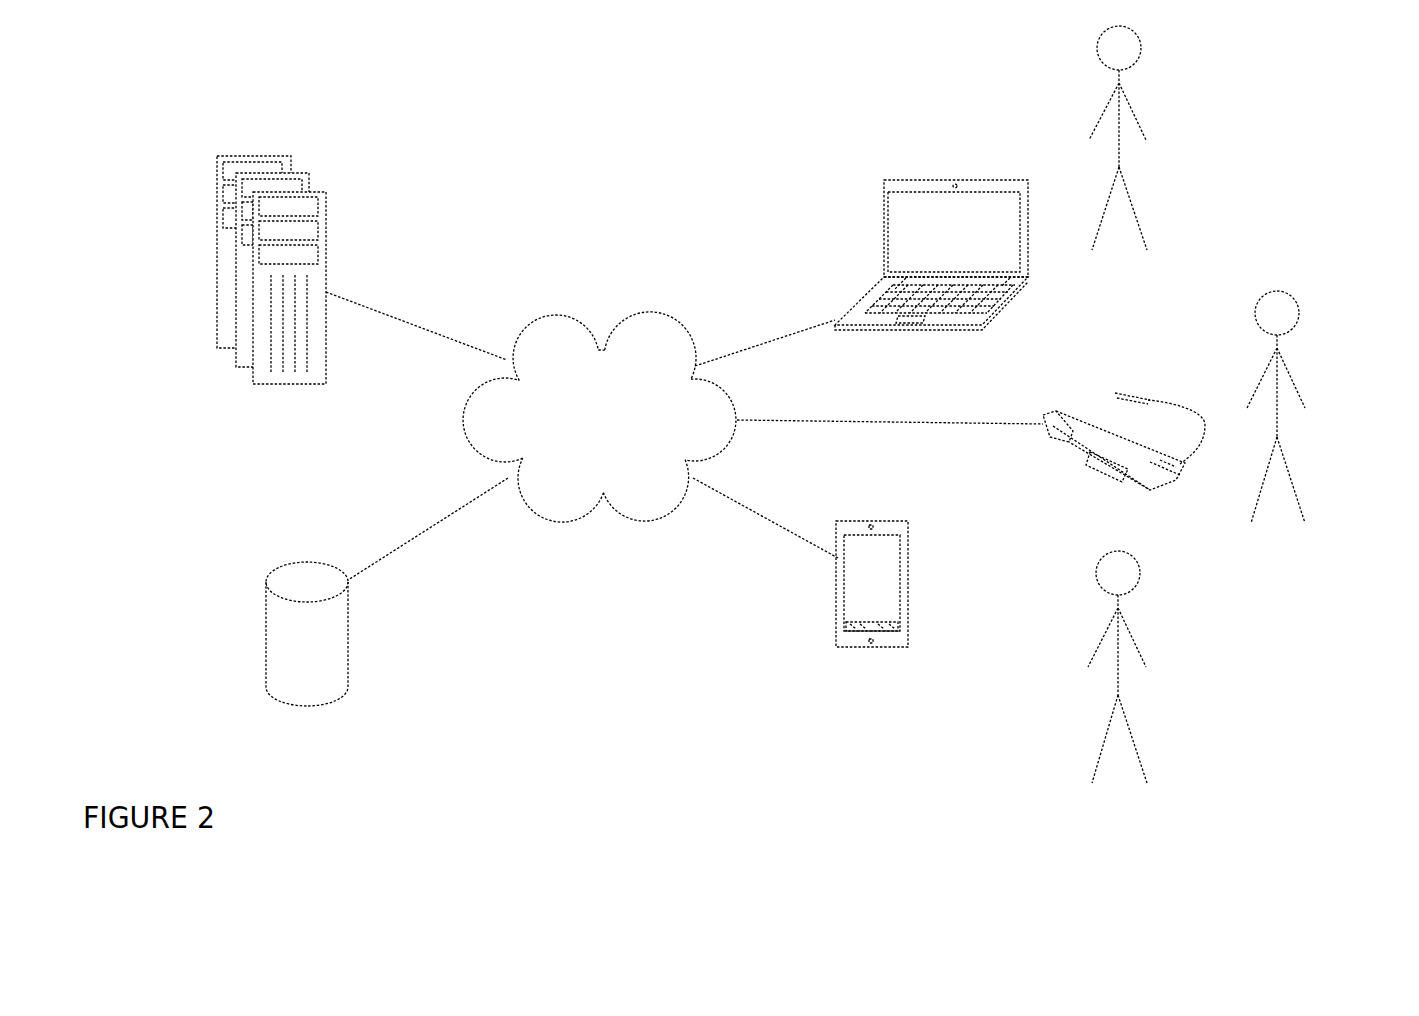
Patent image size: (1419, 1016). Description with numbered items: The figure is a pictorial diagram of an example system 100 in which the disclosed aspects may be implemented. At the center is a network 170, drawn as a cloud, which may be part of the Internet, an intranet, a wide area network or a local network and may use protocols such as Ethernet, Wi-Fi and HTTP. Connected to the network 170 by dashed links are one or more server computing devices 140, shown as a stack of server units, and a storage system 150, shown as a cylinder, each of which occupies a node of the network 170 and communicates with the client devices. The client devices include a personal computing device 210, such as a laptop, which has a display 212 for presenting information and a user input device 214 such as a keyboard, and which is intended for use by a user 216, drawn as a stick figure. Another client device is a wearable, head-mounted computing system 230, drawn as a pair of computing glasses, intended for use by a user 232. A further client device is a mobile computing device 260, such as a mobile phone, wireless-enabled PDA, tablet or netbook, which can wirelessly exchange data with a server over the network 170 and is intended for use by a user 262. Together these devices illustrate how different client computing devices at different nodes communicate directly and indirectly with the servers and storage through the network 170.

The system 100 is at (167, 774).
The server computing device 140 is at (328, 221).
The storage system 150 is at (350, 652).
The network 170 is at (599, 417).
The personal computing device 210 is at (936, 254).
The display 212 is at (884, 205).
The user input device 214 is at (990, 312).
The user 216 is at (1128, 108).
The wearable glasses device 230 is at (1148, 400).
The user 232 is at (1290, 380).
The mobile computing device 260 is at (908, 542).
The user 262 is at (1135, 645).